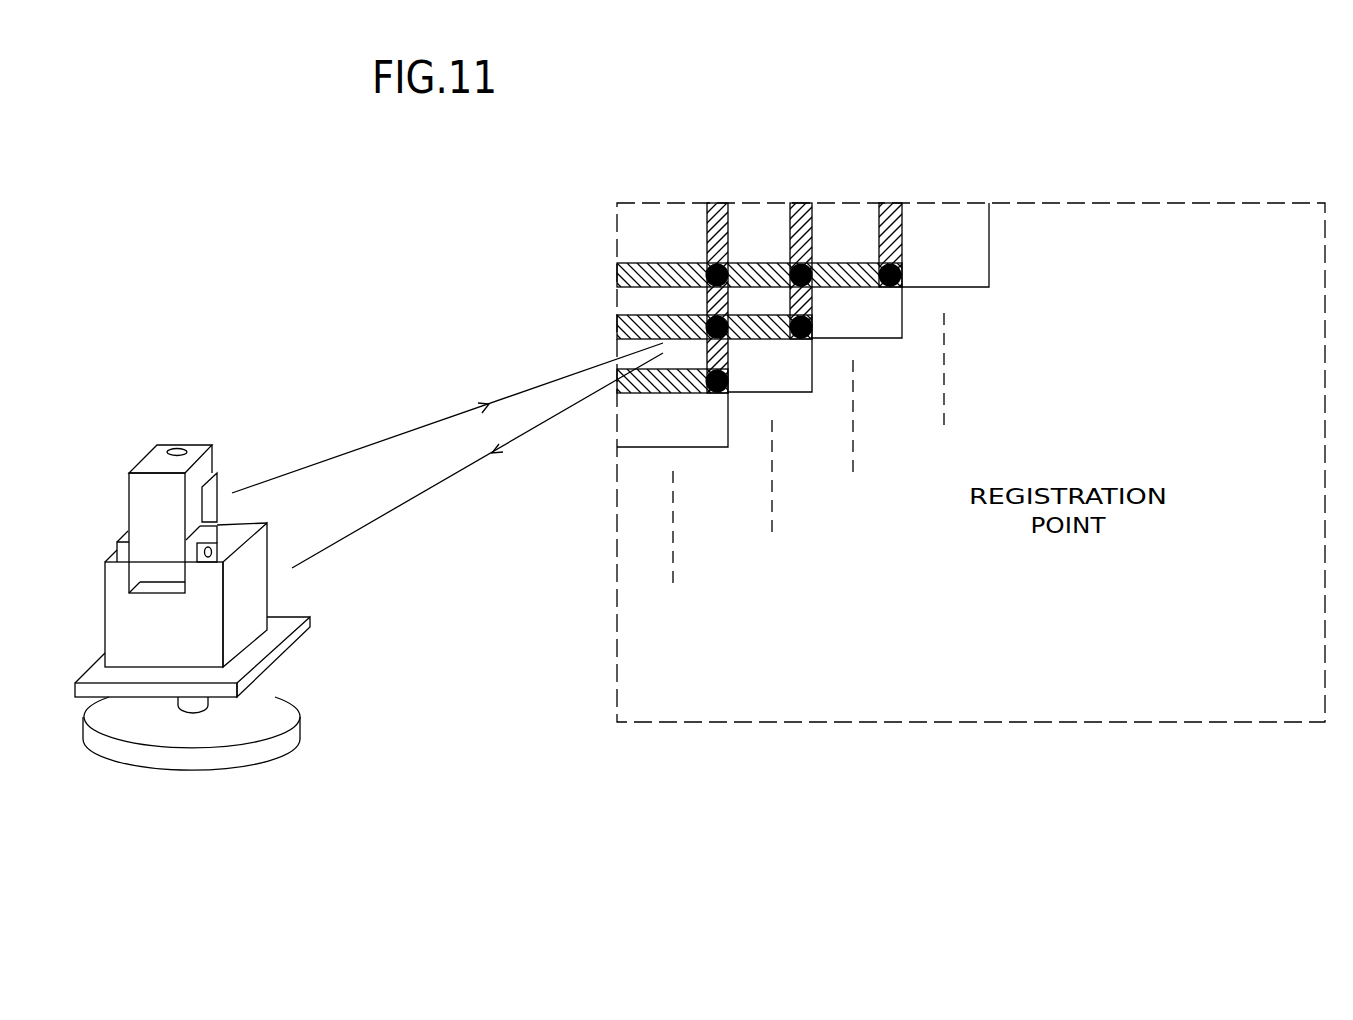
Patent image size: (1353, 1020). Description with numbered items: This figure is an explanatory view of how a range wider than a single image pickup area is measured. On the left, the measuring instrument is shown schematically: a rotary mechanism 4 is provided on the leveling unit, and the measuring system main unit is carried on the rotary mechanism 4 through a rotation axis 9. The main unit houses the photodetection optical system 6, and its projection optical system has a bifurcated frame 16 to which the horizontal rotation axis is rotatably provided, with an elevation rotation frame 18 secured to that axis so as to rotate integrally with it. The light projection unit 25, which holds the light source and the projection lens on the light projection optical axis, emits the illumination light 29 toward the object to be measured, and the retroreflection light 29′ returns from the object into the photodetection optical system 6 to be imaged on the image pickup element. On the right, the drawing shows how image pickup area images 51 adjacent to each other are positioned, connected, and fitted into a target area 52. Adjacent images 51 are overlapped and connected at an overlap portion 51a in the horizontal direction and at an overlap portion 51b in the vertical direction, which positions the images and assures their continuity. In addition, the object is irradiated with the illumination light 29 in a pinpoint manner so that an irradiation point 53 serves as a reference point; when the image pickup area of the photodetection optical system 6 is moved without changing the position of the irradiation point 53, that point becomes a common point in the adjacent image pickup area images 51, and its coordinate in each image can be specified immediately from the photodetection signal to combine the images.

The rotary mechanism 4 is at (293, 673).
The photodetection optical system 6 is at (102, 616).
The rotation axis 9 is at (175, 703).
The bifurcated frame 16 is at (120, 538).
The elevation rotation frame 18 is at (148, 453).
The light projection unit 25 is at (219, 470).
The illumination light 29 is at (437, 422).
The retroreflection light 29′ is at (448, 479).
The image pickup area image 51 is at (990, 243).
The overlap portion 51a is at (903, 228).
The overlap portion 51b is at (853, 288).
The target area 52 is at (1088, 203).
The irradiation point 53 is at (703, 312).